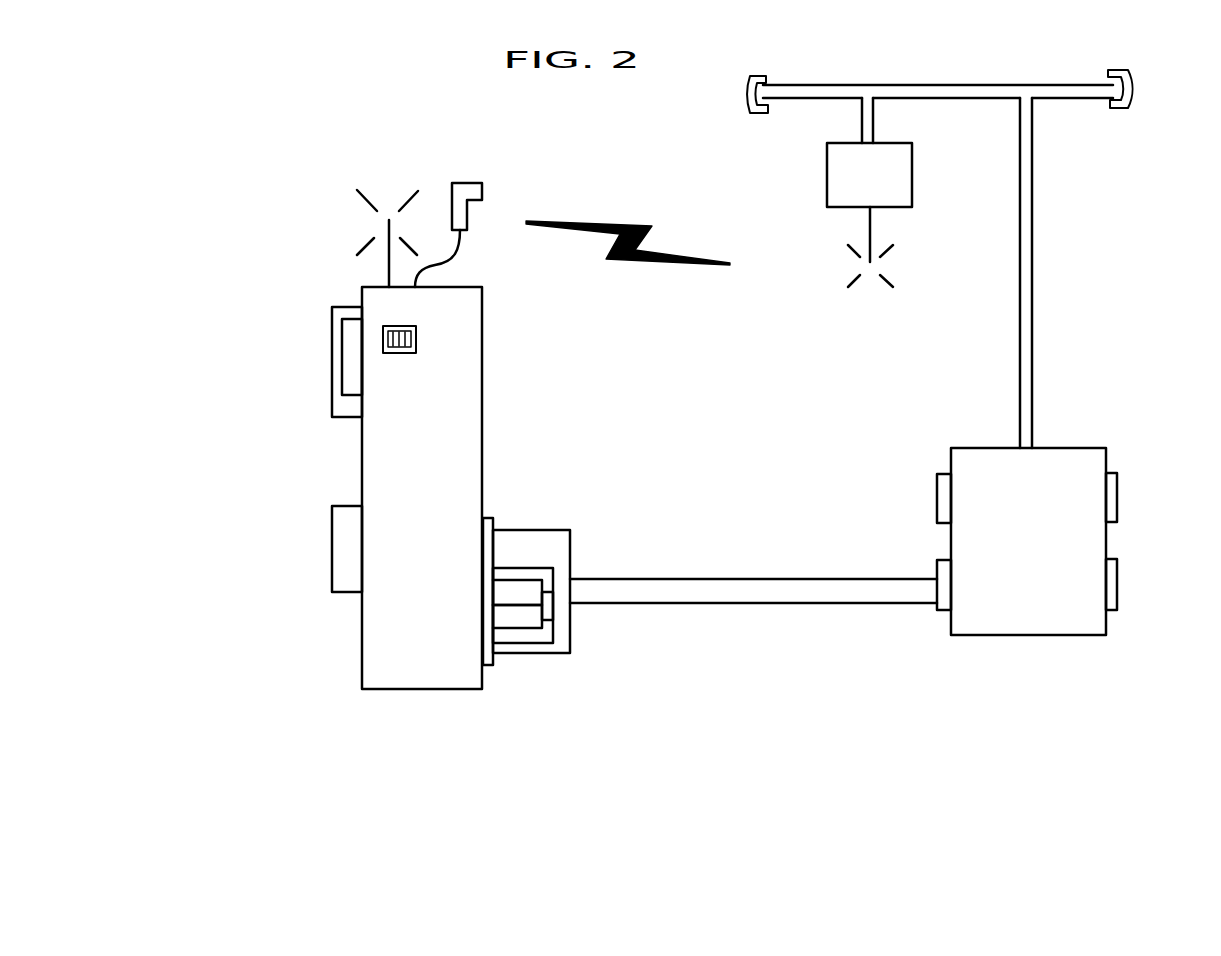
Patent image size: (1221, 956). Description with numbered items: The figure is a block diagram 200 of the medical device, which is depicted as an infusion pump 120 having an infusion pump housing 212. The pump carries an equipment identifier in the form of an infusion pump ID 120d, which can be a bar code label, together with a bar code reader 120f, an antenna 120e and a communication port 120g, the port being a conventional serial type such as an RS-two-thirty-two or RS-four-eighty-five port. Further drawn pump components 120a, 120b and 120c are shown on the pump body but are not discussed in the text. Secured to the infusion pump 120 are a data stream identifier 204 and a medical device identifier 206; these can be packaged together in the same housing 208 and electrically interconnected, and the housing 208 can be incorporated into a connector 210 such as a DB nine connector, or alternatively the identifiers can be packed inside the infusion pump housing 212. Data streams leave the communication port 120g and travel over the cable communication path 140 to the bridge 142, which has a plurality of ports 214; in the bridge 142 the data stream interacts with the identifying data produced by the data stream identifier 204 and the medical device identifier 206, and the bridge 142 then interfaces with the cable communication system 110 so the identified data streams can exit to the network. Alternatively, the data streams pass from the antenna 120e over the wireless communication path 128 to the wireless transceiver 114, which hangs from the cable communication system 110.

The block diagram 200 is at (199, 148).
The cable communication system 110 is at (915, 84).
The wireless transceiver 114 is at (827, 168).
The infusion pump 120 is at (455, 675).
The button 120a is at (332, 567).
The display 120b is at (342, 358).
The display housing 120c is at (332, 407).
The infusion pump ID 120d is at (402, 353).
The antenna 120e is at (388, 252).
The bar code reader 120f is at (482, 183).
The communication port 120g is at (496, 520).
The wireless communication path 128 is at (632, 260).
The cable communication path 140 is at (753, 603).
The bridge 142 is at (1050, 614).
The data stream identifier 204 is at (540, 593).
The medical device identifier 206 is at (547, 617).
The housing 208 is at (542, 655).
The connector 210 is at (500, 655).
The infusion pump housing 212 is at (482, 418).
The ports 214 is at (937, 480).